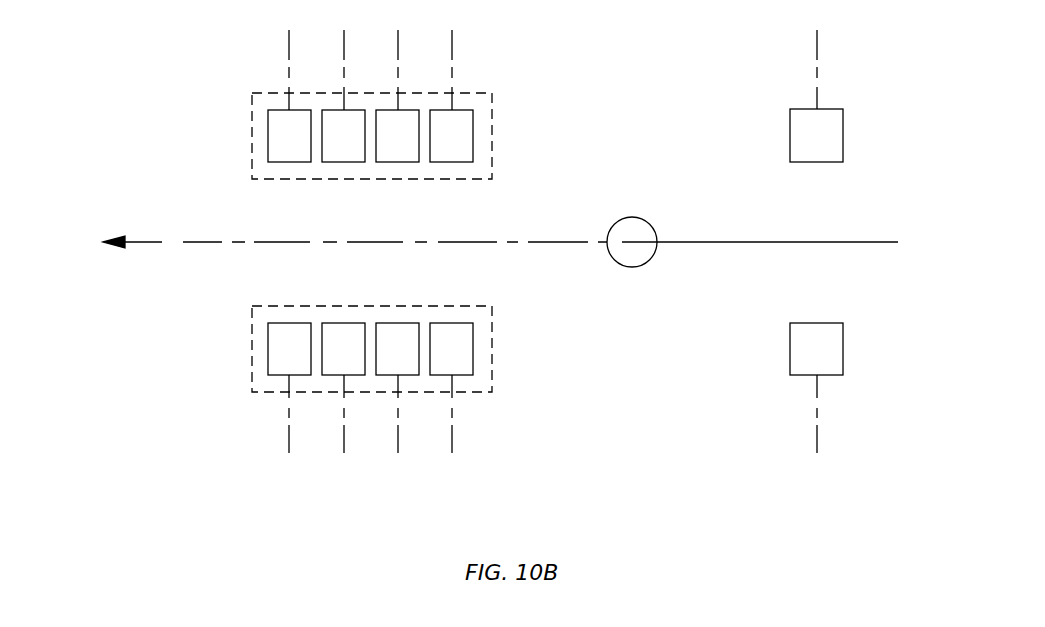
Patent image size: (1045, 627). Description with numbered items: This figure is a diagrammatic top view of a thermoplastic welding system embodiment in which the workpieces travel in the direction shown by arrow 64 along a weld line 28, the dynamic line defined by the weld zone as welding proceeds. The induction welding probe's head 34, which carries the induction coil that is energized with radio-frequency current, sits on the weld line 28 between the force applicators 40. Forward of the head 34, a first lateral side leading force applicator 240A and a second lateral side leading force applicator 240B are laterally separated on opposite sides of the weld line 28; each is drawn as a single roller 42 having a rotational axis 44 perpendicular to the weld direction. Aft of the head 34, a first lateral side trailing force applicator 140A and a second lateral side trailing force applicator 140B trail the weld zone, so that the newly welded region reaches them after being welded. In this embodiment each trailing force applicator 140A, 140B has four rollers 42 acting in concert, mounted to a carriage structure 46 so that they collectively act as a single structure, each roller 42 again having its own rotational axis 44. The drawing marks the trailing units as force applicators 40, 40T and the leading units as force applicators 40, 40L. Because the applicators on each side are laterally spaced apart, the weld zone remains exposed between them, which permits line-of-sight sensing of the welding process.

The weld line 28 is at (217, 246).
The head 34 is at (633, 257).
The force applicator 40 is at (543, 241).
The transverse sensor 40T is at (341, 241).
The longitudinal sensor 40L is at (890, 263).
The roller 42 is at (350, 150).
The rotational axis 44 is at (452, 40).
The carriage structure 46 is at (492, 137).
The arrow 64 is at (143, 246).
The first lateral side trailing force applicator 140A is at (237, 346).
The second lateral side trailing force applicator 140B is at (352, 111).
The first lateral side leading force applicator 240A is at (864, 352).
The second lateral side leading force applicator 240B is at (856, 128).